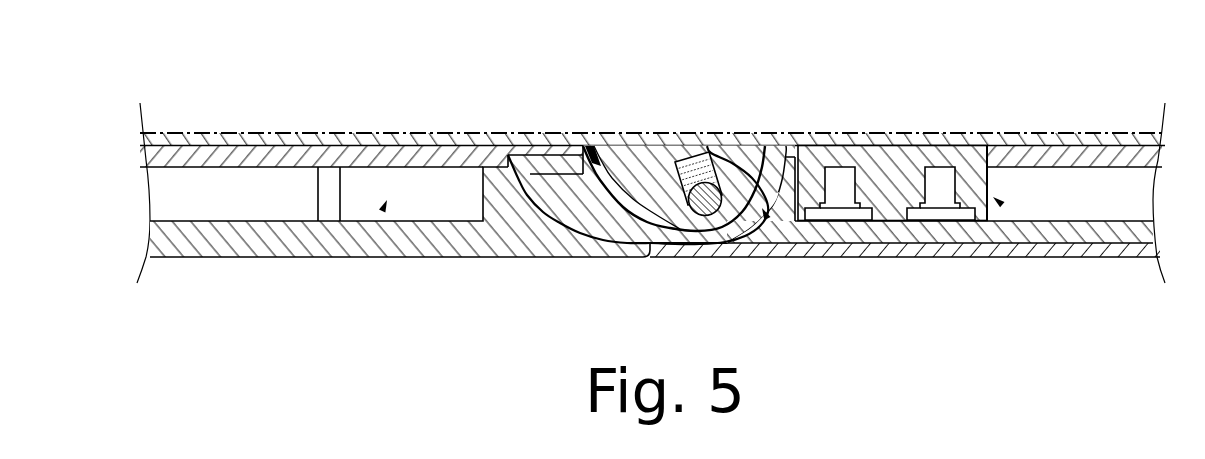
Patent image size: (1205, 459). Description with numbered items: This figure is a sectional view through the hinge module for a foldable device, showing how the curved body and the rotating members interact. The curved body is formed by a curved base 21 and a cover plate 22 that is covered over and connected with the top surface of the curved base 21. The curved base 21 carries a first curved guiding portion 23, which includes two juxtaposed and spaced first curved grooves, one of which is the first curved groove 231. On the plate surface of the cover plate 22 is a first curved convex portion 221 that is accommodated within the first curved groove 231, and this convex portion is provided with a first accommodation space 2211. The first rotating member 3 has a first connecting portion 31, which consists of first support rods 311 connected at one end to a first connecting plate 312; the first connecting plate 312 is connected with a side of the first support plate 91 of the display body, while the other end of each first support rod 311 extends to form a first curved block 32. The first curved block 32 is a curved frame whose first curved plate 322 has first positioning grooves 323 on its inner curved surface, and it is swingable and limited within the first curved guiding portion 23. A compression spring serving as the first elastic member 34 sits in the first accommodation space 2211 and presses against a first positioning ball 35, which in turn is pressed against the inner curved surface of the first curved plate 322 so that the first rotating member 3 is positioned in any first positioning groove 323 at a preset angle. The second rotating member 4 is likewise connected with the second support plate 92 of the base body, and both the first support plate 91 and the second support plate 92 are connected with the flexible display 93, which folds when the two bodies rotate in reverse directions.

The first rotating member 3 is at (1002, 205).
The second rotating member 4 is at (382, 211).
The curved base 21 is at (563, 198).
The cover plate 22 is at (631, 139).
The first curved convex portion 221 is at (615, 155).
The first accommodation space 2211 is at (687, 155).
The first curved guiding portion 23 is at (651, 244).
The first curved groove 231 is at (603, 205).
The first connecting portion 31 is at (890, 118).
The first support rod 311 is at (830, 153).
The first connecting plate 312 is at (897, 170).
The first curved block 32 is at (761, 229).
The first curved plate 322 is at (767, 219).
The first positioning groove 323 is at (693, 233).
The first elastic member 34 is at (702, 150).
The first positioning ball 35 is at (708, 216).
The first support plate 91 is at (1053, 143).
The second support plate 92 is at (384, 156).
The flexible display 93 is at (985, 143).